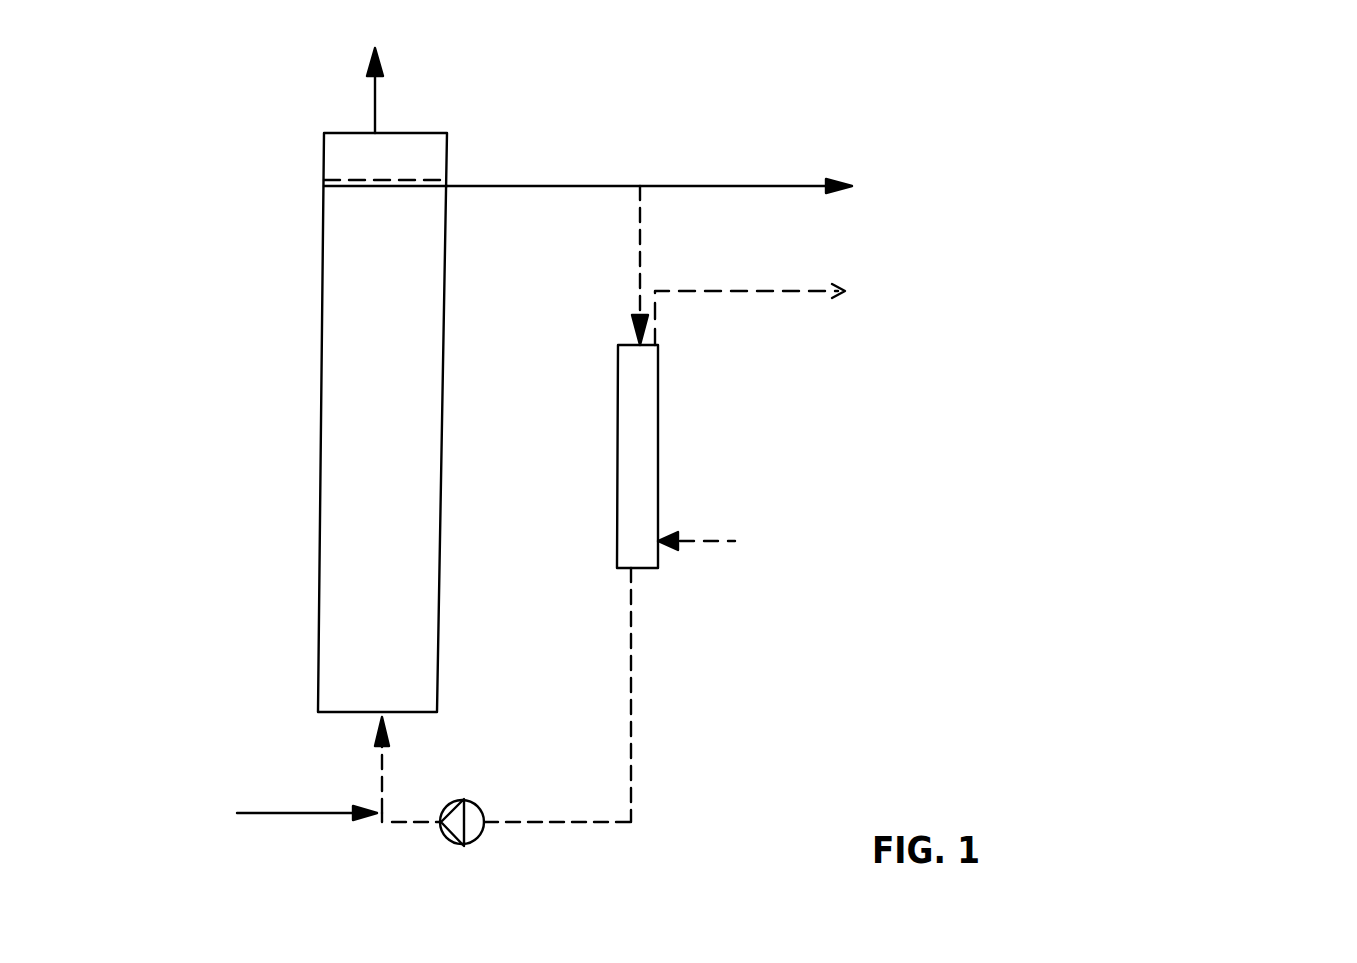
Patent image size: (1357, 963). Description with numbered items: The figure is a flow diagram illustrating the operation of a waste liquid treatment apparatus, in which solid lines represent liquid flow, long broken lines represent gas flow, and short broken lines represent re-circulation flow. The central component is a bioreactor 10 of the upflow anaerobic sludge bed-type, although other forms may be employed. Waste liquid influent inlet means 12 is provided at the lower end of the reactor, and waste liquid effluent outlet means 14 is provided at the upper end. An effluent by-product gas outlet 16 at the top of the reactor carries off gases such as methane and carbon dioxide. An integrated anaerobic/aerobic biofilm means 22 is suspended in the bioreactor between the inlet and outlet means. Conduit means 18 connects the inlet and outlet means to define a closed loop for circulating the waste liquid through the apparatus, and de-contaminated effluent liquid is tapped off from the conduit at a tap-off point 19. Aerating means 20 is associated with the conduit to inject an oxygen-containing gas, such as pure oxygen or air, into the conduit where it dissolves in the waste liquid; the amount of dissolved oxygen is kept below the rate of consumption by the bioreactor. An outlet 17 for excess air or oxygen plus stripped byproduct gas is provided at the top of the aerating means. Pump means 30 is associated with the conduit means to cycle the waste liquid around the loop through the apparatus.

The bioreactor 10 is at (321, 427).
The waste liquid influent inlet means 12 is at (375, 717).
The waste liquid effluent outlet means 14 is at (448, 180).
The effluent by-product gas outlet 16 is at (451, 76).
The outlet for excess air plus stripped byproduct gas 17 is at (767, 305).
The conduit means 18 is at (645, 228).
The effluent liquid tap-off point 19 is at (640, 186).
The aerating means 20 is at (658, 395).
The integrated anaerobic/aerobic biofilm means 22 is at (378, 363).
The pump means 30 is at (464, 799).